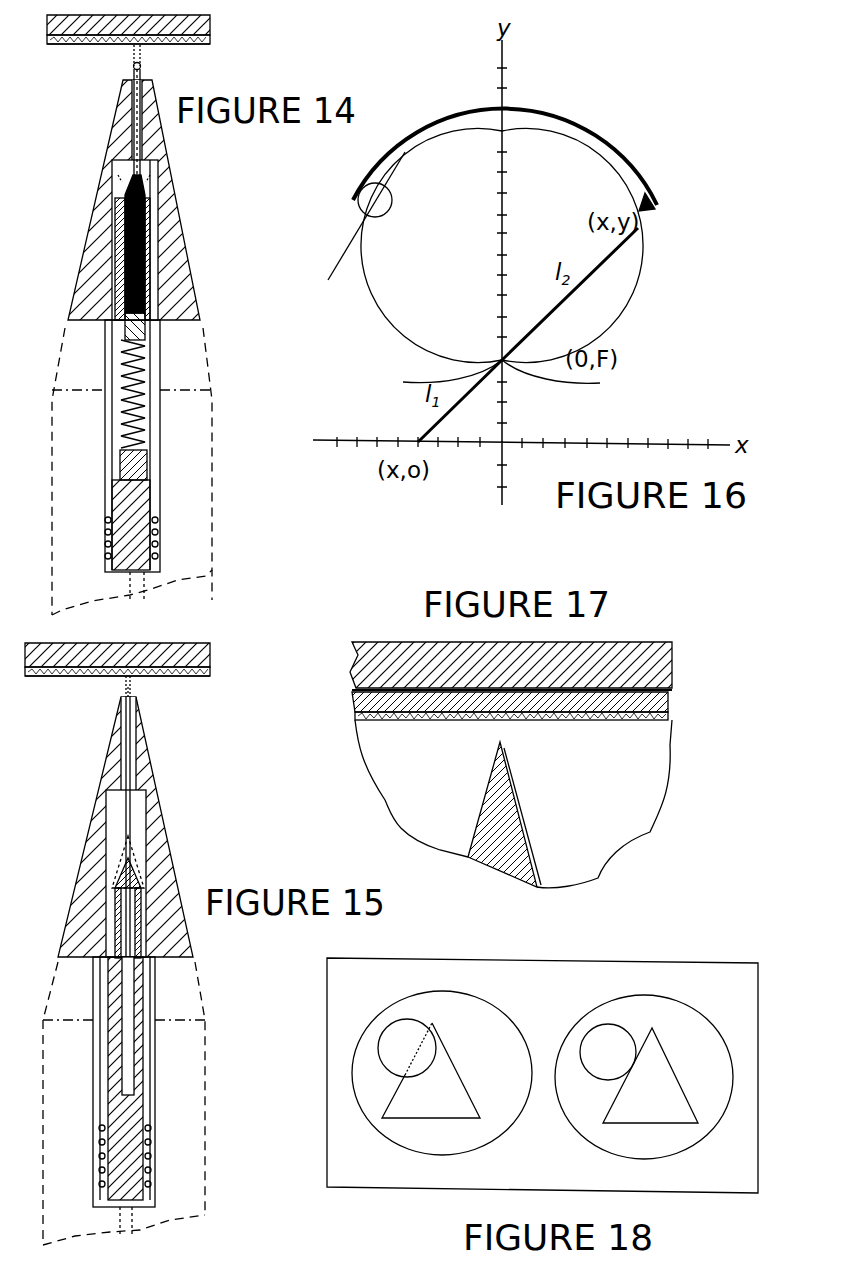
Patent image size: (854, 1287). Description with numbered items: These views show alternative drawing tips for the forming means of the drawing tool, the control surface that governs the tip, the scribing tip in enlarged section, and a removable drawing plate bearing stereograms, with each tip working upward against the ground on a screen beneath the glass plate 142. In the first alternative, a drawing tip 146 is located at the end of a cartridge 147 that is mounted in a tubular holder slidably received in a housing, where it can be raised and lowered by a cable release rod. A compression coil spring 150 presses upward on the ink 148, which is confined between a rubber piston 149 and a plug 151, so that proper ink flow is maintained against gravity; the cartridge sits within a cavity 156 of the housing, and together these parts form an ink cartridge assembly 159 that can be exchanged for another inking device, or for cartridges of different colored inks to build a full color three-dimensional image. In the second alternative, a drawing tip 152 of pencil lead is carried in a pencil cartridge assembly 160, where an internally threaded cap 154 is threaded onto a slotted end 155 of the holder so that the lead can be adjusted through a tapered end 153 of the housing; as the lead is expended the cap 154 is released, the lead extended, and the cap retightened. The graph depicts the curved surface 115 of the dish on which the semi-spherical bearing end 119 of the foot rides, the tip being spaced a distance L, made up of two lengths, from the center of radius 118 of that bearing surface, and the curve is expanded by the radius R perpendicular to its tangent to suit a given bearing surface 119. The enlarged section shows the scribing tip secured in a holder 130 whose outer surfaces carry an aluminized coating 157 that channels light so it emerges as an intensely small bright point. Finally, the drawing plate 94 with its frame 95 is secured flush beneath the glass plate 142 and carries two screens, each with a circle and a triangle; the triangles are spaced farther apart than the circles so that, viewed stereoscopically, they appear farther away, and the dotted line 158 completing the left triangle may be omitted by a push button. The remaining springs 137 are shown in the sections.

In FIG. 14, the glass plate 142 is at (206, 25).
In FIG. 15, the glass plate 142 is at (208, 652).
In FIG. 17, the glass plate 142 is at (660, 660).
In FIG. 14, the drawing tip 146 is at (133, 66).
In FIG. 14, the cartridge 147 is at (143, 76).
In FIG. 14, the ink 148 is at (125, 200).
In FIG. 14, the cavity 156 is at (149, 188).
In FIG. 14, the ink cartridge assembly 159 is at (200, 207).
In FIG. 14, the rubber piston 149 is at (142, 333).
In FIG. 14, the compression coil spring 150 is at (136, 415).
In FIG. 14, the plug 151 is at (142, 470).
In FIG. 14, the return spring 137 is at (152, 550).
In FIG. 15, the drawing tip 152 is at (125, 695).
In FIG. 15, the tapered end 153 is at (148, 772).
In FIG. 15, the pencil cartridge assembly 160 is at (197, 820).
In FIG. 15, the internally threaded cap 154 is at (118, 860).
In FIG. 15, the slotted end 155 is at (118, 896).
In FIG. 16, the curved surface 115 is at (648, 212).
In FIG. 16, the semi-spherical bearing end 119 is at (360, 197).
In FIG. 16, the center of radius 118 is at (386, 216).
In FIG. 17, the aluminized coating 157 is at (514, 800).
In FIG. 17, the holder 130 is at (520, 846).
In FIG. 18, the drawing plate 94 is at (374, 952).
In FIG. 18, the frame 95 is at (472, 972).
In FIG. 18, the dotted line 158 is at (420, 1047).